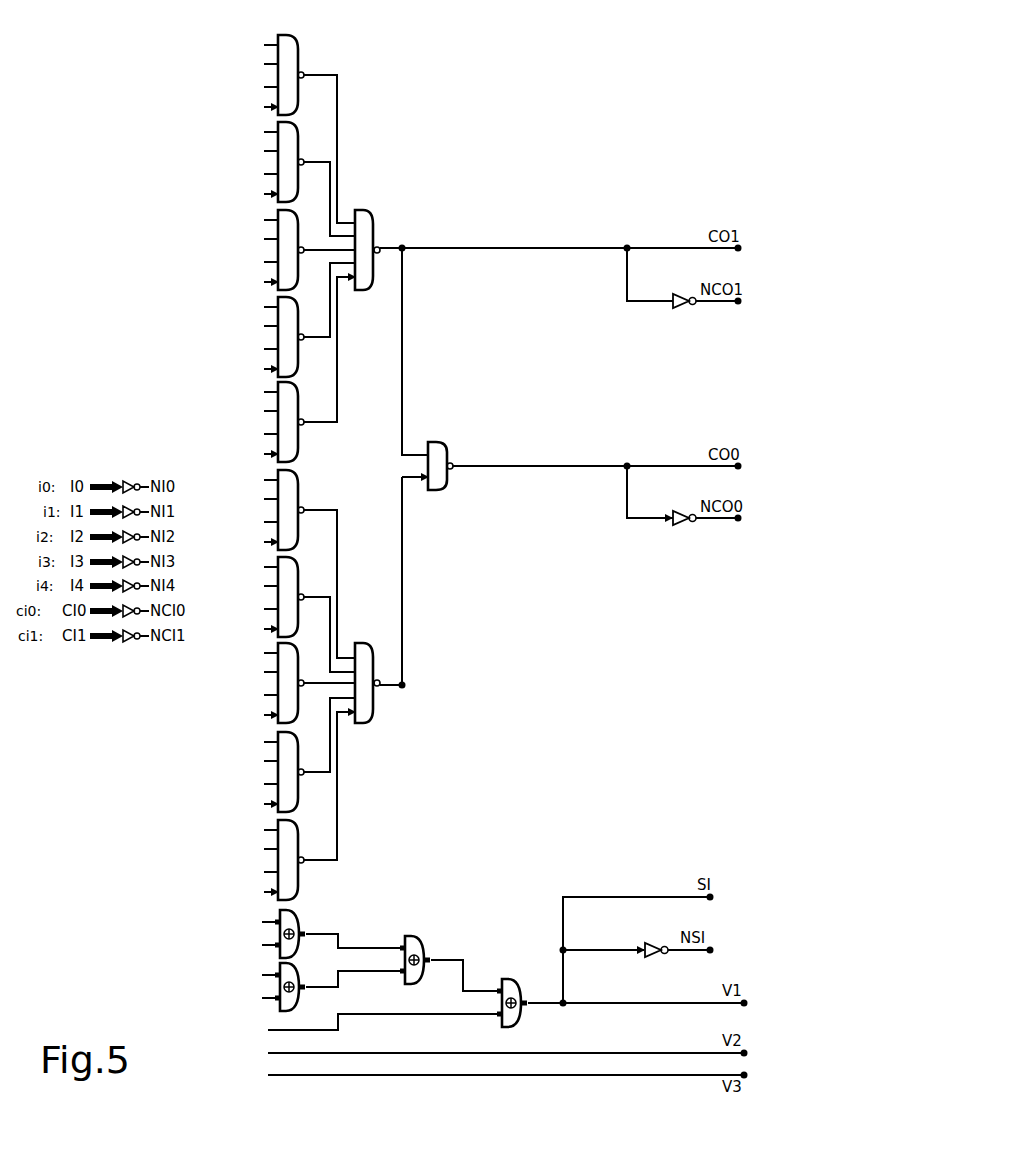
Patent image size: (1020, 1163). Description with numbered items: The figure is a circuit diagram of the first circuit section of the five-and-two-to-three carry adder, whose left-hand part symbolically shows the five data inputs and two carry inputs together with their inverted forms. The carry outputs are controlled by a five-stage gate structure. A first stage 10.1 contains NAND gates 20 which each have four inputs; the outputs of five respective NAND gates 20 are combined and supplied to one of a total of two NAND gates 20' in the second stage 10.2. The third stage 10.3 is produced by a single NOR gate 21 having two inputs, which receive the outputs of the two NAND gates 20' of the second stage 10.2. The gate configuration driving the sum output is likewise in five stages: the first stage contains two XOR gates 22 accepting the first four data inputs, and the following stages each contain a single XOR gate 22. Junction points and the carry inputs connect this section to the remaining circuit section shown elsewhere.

The first stage 10.1 is at (302, 458).
The second stage 10.2 is at (363, 460).
The third stage 10.3 is at (503, 466).
The NAND gate 20 is at (285, 470).
The NAND gate 20' is at (343, 467).
The NOR gate 21 is at (440, 489).
The XOR gate 22 is at (397, 997).